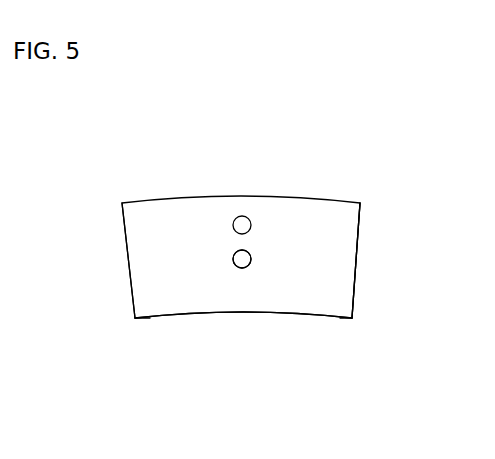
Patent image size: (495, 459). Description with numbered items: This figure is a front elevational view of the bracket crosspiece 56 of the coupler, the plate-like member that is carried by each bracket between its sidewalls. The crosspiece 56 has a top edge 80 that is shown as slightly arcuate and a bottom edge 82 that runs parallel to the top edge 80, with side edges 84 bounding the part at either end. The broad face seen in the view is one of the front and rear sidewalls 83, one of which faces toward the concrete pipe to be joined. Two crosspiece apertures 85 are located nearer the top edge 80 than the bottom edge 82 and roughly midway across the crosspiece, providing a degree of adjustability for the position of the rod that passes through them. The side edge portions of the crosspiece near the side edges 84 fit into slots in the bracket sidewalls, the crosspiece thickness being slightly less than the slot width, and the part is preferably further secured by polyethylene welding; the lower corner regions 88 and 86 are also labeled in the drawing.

The top edge 80 is at (286, 214).
The crosspiece aperture 85 is at (247, 250).
The side edges 84 is at (243, 237).
The bracket crosspiece 56 is at (356, 258).
The lower left portion 88 is at (114, 341).
The front and rear sidewalls 83 is at (227, 326).
The bottom edge 82 is at (245, 369).
The lower right portion 86 is at (360, 341).